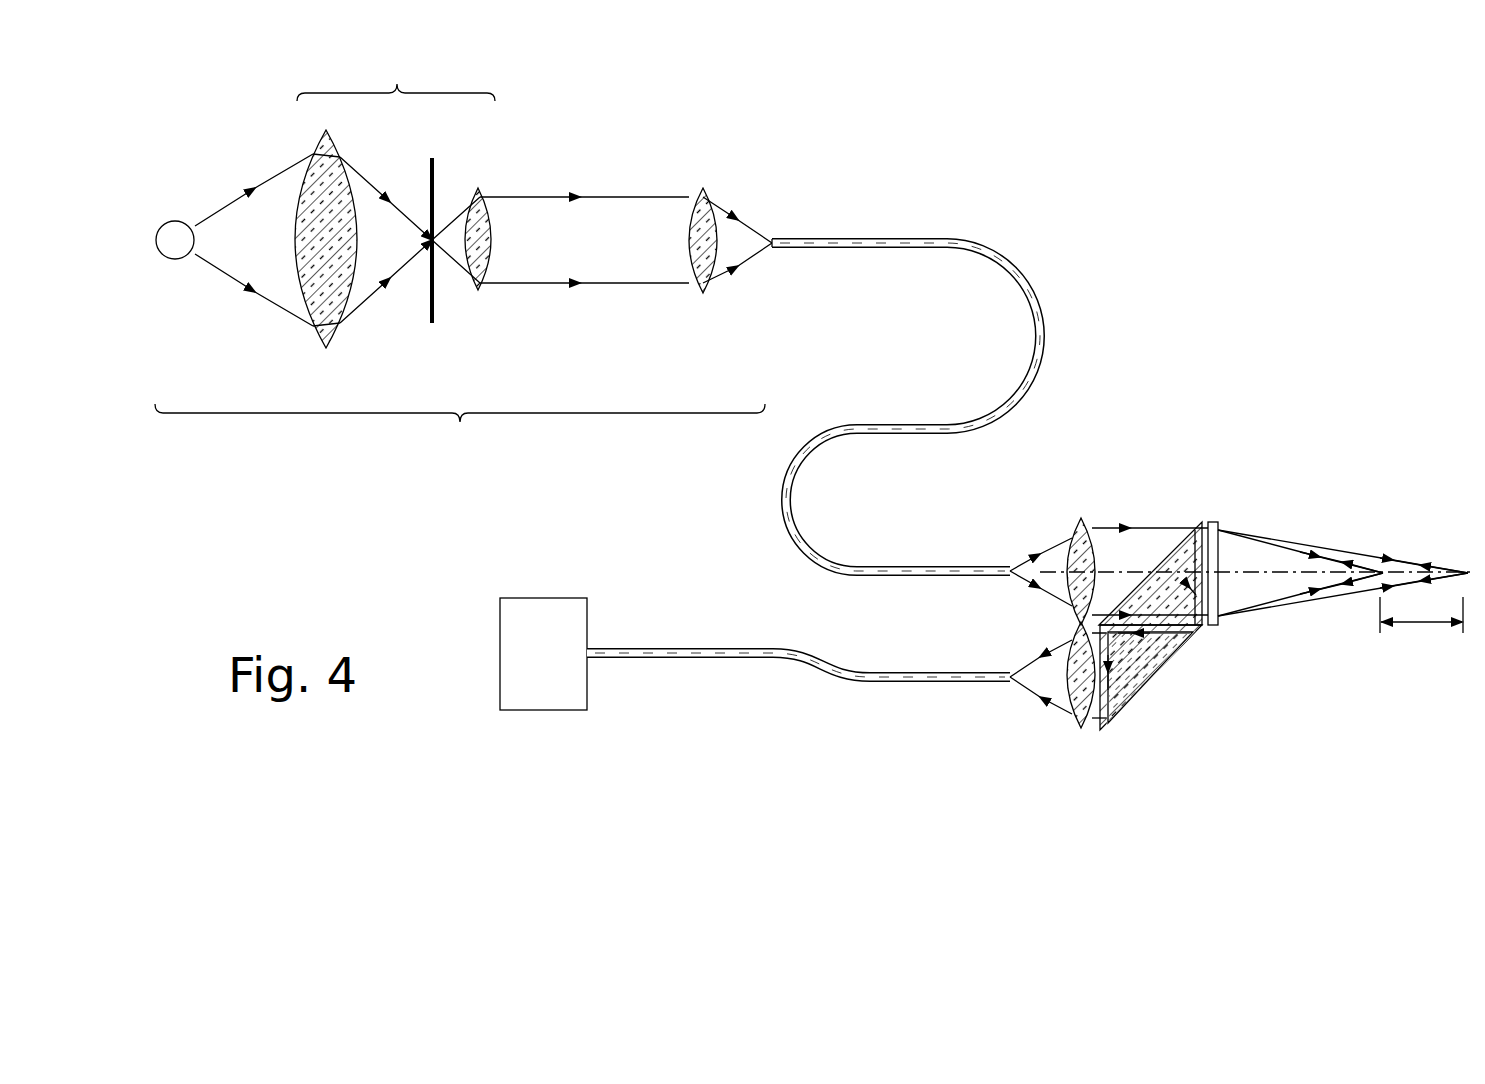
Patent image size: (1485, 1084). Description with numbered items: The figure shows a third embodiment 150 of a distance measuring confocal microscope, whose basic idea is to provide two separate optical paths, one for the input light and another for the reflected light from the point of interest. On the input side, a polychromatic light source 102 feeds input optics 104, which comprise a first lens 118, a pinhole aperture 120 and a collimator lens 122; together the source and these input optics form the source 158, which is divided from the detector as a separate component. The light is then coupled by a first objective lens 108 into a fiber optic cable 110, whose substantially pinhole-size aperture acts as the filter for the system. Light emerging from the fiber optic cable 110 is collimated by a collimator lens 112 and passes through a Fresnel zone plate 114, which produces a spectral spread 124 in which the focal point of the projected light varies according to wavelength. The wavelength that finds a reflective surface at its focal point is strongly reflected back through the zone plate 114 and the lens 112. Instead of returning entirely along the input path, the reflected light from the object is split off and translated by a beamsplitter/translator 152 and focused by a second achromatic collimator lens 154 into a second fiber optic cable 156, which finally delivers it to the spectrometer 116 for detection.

The third embodiment 150 is at (925, 118).
The polychromatic light source 102 is at (175, 221).
The input optics 104 is at (396, 78).
The first lens 118 is at (326, 348).
The pinhole aperture 120 is at (432, 325).
The collimator lens 122 is at (478, 292).
The first objective lens 108 is at (703, 188).
The fiber optic cable 110 is at (1045, 323).
The source 158 is at (460, 433).
The collimator lens 112 is at (1081, 518).
The Fresnel zone plate 114 is at (1213, 522).
The beamsplitter/translator 152 is at (1150, 680).
The second achromatic collimator lens 154 is at (1081, 730).
The second fiber optic cable 156 is at (660, 648).
The spectrometer 116 is at (572, 666).
The spectral spread 124 is at (1422, 628).